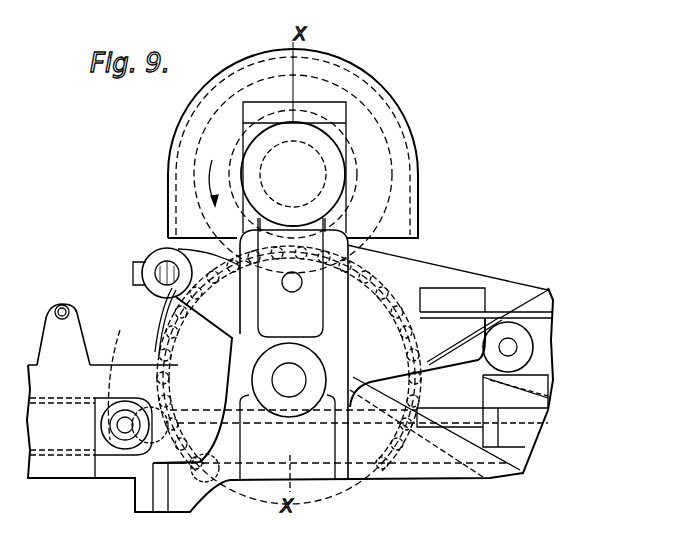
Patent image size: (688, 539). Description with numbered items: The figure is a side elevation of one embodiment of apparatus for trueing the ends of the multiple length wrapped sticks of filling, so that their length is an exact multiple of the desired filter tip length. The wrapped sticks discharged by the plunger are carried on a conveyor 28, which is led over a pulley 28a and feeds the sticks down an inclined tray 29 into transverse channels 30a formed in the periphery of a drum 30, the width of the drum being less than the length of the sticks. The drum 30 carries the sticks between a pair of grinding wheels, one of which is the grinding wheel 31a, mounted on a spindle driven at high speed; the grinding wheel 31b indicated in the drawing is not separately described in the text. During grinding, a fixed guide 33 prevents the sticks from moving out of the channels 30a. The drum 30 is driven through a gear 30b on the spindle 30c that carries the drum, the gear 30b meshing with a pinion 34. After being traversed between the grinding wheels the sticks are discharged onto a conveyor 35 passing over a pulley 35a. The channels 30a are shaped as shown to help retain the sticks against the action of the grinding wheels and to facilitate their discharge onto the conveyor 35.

The conveyor 28 is at (533, 317).
The pulley 28a is at (497, 352).
The inclined tray 29 is at (450, 348).
The drum 30 is at (372, 278).
The transverse channels 30a is at (404, 298).
The gear 30b is at (240, 349).
The spindle 30c is at (291, 374).
The grinding wheel 31a is at (390, 135).
The drum housing 31b is at (385, 87).
The fixed guide 33 is at (163, 327).
The pinion 34 is at (181, 460).
The conveyor 35 is at (128, 402).
The pulley 35a is at (121, 443).